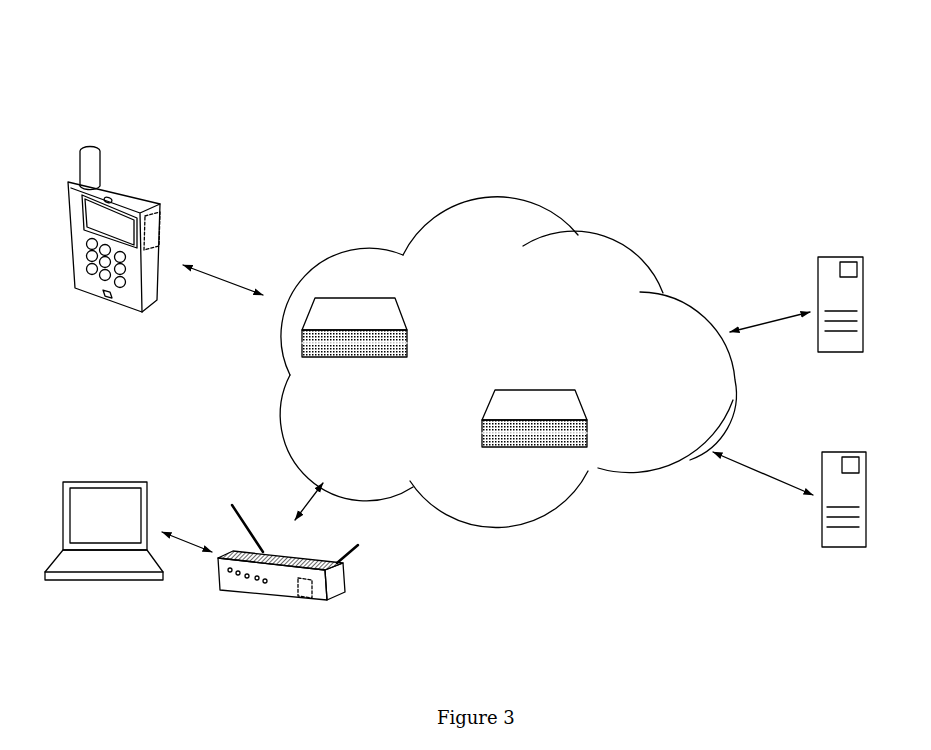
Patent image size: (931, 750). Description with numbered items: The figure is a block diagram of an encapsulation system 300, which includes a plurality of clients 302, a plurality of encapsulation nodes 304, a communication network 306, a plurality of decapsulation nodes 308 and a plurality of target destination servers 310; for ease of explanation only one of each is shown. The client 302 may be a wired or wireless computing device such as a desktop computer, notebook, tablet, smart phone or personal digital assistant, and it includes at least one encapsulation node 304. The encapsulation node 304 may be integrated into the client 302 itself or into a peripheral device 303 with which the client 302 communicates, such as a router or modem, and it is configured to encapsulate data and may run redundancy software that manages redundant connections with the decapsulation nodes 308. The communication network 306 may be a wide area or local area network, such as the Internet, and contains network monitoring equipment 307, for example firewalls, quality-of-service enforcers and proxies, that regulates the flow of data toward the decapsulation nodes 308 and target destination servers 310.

The encapsulation system 300 is at (695, 105).
The client 302 is at (111, 181).
The peripheral device 303 is at (282, 597).
The encapsulation node 304 is at (155, 238).
The communication network 306 is at (462, 207).
The network monitoring equipment 307 is at (503, 395).
The decapsulation node 308 is at (818, 277).
The target destination server 310 is at (840, 548).